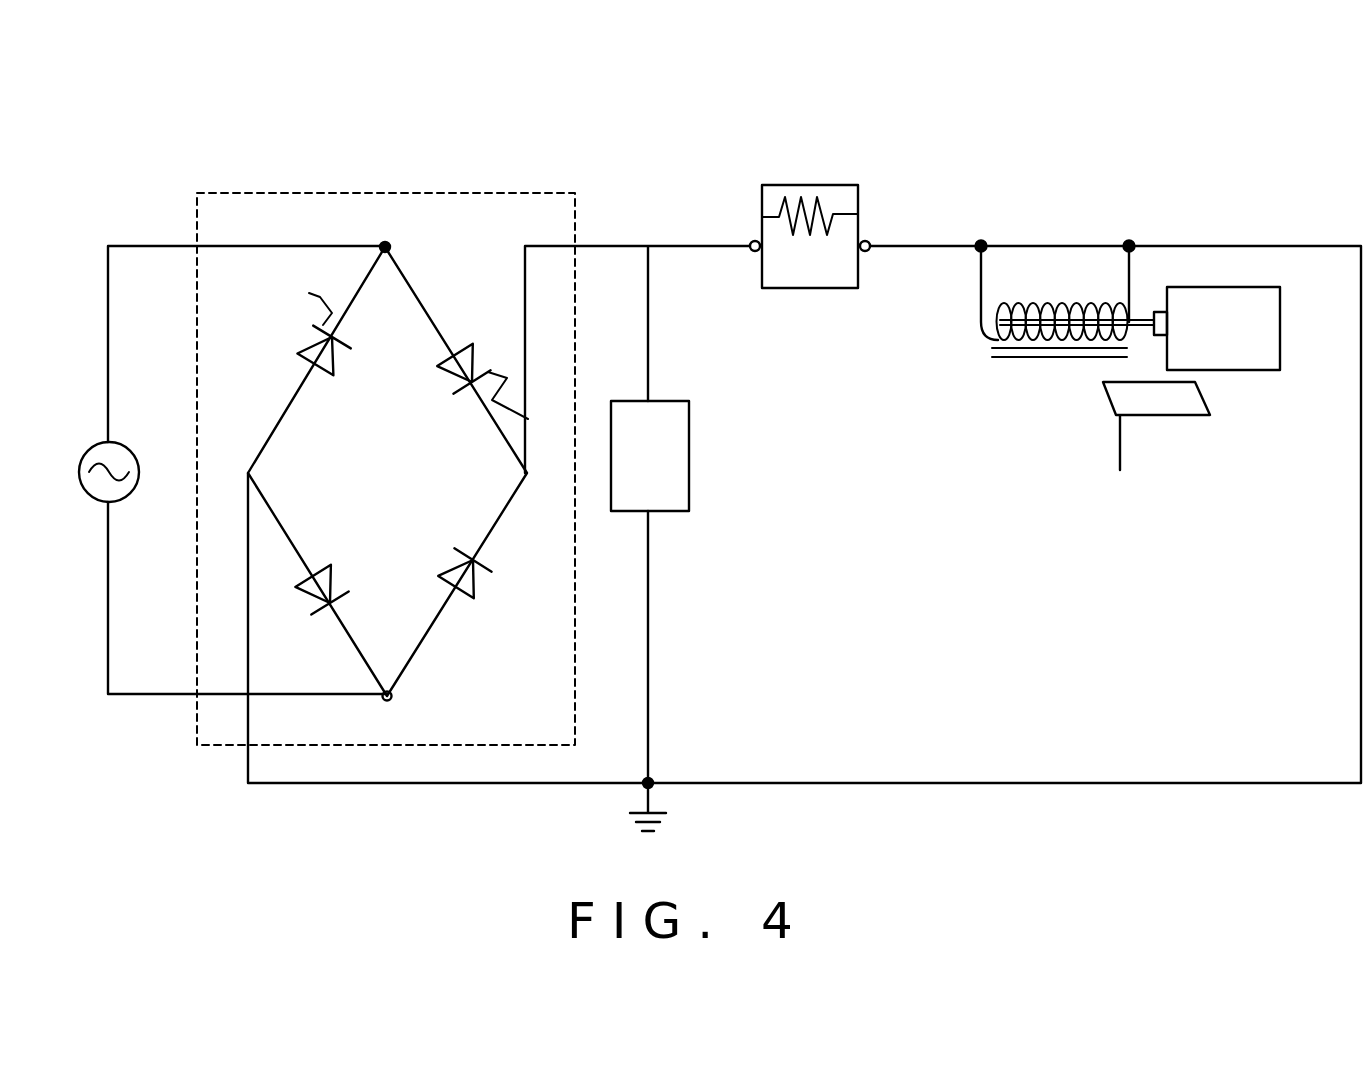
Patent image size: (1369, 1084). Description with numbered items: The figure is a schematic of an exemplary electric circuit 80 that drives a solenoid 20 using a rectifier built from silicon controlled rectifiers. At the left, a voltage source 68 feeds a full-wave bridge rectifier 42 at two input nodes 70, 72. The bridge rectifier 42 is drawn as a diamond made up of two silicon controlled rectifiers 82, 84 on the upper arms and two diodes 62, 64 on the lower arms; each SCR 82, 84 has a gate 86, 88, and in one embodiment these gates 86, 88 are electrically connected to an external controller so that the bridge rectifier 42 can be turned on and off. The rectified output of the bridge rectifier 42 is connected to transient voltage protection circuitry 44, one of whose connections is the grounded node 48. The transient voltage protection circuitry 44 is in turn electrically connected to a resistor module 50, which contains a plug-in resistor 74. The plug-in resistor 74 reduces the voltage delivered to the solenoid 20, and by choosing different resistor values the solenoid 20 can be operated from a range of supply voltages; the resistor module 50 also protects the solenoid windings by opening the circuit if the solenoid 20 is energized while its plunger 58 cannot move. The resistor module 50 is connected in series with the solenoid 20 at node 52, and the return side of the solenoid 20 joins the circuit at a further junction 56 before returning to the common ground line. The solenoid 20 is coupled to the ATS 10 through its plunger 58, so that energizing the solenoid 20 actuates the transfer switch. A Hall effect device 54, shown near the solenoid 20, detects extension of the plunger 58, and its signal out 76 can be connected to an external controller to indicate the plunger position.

The ATS 10 is at (1283, 330).
The solenoid 20 is at (997, 337).
The full-wave bridge rectifier 42 is at (483, 193).
The transient voltage protection circuitry 44 is at (689, 475).
The node 48 is at (651, 780).
The resistor module 50 is at (813, 207).
The node 52 is at (981, 245).
The Hall effect device 54 is at (1165, 415).
The junction node 56 is at (1129, 245).
The plunger 58 is at (1157, 312).
The diode 62 is at (477, 578).
The diode 64 is at (335, 586).
The voltage source 68 is at (79, 472).
The node 70 is at (390, 245).
The node 72 is at (392, 698).
The plug-in resistor 74 is at (847, 217).
The signal out 76 is at (1080, 503).
The electric circuit 80 is at (907, 123).
The silicon controlled rectifier 82 is at (305, 350).
The silicon controlled rectifier 84 is at (473, 358).
The gate 86 is at (320, 294).
The gate 88 is at (555, 424).